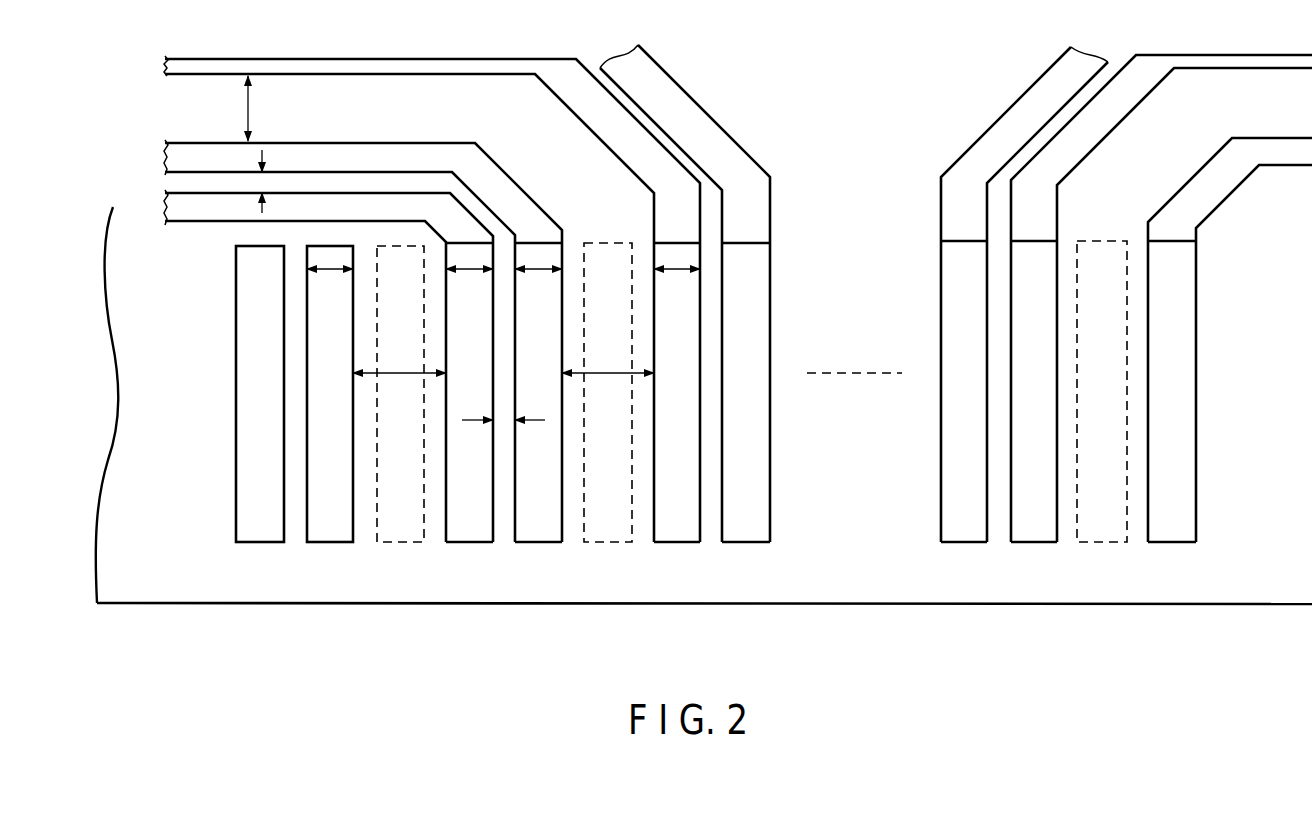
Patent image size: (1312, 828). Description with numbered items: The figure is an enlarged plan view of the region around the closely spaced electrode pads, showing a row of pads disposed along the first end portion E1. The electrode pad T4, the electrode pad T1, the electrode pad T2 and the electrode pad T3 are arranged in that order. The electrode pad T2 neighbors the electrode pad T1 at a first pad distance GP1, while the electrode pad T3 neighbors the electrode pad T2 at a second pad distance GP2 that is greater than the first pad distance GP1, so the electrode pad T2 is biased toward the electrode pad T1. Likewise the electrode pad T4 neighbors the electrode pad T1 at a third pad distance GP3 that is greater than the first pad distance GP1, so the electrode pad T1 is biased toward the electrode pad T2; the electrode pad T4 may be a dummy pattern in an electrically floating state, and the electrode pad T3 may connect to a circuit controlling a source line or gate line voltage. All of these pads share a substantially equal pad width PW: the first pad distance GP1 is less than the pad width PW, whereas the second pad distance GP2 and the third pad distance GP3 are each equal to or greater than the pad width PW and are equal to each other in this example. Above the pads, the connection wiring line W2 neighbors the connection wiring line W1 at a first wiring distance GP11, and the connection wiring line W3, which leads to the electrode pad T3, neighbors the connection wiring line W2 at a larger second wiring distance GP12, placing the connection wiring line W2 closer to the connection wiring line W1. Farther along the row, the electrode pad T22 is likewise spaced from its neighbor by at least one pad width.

The first connection wiring line W1 is at (185, 223).
The second connection wiring line W2 is at (165, 158).
The third connection wiring line W3 is at (165, 66).
The first wiring distance GP11 is at (264, 181).
The second wiring distance GP12 is at (246, 110).
The first pad distance GP1 is at (503, 437).
The second pad distance GP2 is at (609, 370).
The third pad distance GP3 is at (402, 370).
The pad width PW is at (330, 272).
The electrode pad T1 is at (470, 533).
The electrode pad T2 is at (545, 533).
The electrode pad T3 is at (680, 533).
The electrode pad T4 is at (328, 533).
The electrode pad T22 is at (1172, 527).
The first end portion E1 is at (778, 580).